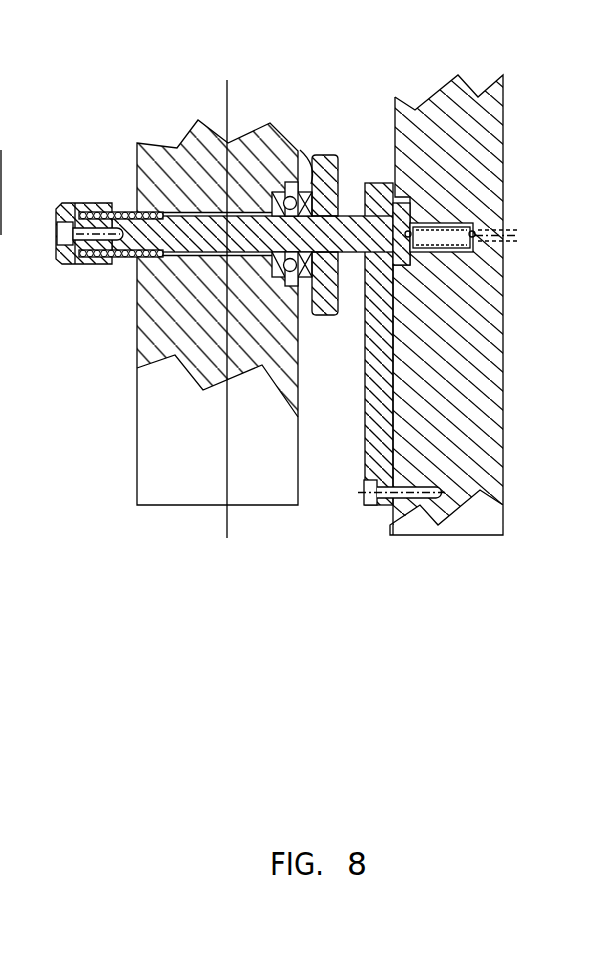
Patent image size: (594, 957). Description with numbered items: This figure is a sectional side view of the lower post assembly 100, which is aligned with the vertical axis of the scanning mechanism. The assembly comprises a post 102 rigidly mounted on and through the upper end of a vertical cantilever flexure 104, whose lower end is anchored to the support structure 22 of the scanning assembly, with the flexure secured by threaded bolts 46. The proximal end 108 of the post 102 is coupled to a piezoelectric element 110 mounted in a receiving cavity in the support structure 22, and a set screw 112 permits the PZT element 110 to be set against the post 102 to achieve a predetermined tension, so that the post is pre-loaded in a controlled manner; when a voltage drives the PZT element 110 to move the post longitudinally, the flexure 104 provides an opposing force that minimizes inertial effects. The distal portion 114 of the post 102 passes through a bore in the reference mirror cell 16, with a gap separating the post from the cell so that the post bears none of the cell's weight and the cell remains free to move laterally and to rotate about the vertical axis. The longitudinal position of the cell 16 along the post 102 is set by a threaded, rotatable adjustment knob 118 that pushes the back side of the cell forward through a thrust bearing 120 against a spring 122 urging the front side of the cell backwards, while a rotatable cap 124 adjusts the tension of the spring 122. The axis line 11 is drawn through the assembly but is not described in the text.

The post assembly 100 is at (335, 110).
The post 102 is at (351, 216).
The cantilever flexure 104 is at (363, 412).
The proximal end 108 is at (410, 208).
The piezoelectric element 110 is at (452, 233).
The set screw 112 is at (500, 240).
The distal portion 114 is at (205, 256).
The reference axis 11 is at (227, 256).
The cell 16 is at (155, 470).
The support structure 22 is at (472, 523).
The threaded bolts 46 is at (362, 494).
The adjustment knob 118 is at (320, 316).
The thrust bearing 120 is at (303, 184).
The spring 122 is at (128, 213).
The rotatable cap 124 is at (50, 232).